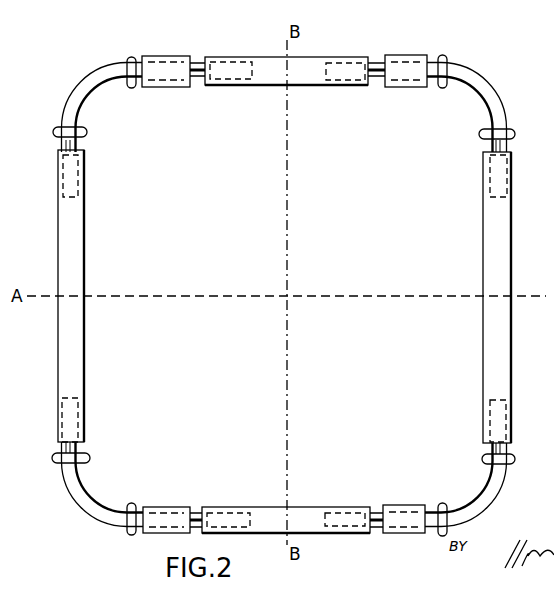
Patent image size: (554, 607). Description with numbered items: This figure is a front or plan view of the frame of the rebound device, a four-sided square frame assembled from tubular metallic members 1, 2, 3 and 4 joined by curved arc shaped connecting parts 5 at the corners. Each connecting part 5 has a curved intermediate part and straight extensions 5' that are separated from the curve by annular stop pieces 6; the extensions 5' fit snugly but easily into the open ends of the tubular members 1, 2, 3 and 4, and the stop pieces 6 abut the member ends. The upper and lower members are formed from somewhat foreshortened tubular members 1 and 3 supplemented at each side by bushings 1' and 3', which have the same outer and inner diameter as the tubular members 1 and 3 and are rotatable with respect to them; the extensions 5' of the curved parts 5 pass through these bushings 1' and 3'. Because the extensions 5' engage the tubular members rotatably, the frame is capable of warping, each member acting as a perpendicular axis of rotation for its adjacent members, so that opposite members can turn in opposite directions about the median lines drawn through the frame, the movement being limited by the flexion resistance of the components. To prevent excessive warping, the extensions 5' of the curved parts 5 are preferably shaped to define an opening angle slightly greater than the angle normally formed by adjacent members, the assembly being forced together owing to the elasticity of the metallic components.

The tubular metallic member 1 is at (286, 95).
The bushing 1' is at (284, 94).
The tubular metallic member 2 is at (496, 251).
The tubular metallic member 3 is at (286, 503).
The bushing 3' is at (284, 500).
The tubular metallic member 4 is at (72, 350).
The curved arc shaped connecting part 5 is at (286, 285).
The straight extension 5' is at (307, 275).
The annular stop piece 6 is at (131, 57).